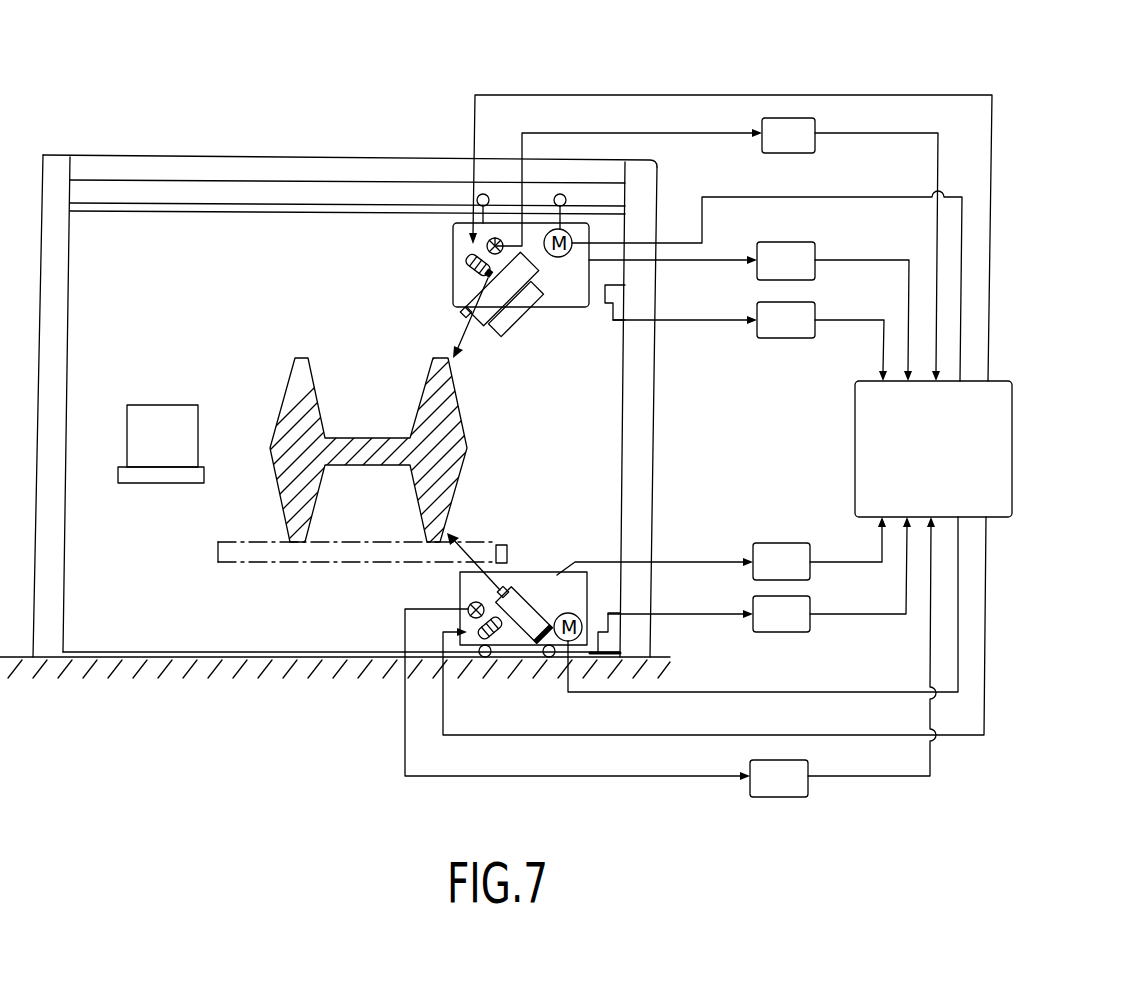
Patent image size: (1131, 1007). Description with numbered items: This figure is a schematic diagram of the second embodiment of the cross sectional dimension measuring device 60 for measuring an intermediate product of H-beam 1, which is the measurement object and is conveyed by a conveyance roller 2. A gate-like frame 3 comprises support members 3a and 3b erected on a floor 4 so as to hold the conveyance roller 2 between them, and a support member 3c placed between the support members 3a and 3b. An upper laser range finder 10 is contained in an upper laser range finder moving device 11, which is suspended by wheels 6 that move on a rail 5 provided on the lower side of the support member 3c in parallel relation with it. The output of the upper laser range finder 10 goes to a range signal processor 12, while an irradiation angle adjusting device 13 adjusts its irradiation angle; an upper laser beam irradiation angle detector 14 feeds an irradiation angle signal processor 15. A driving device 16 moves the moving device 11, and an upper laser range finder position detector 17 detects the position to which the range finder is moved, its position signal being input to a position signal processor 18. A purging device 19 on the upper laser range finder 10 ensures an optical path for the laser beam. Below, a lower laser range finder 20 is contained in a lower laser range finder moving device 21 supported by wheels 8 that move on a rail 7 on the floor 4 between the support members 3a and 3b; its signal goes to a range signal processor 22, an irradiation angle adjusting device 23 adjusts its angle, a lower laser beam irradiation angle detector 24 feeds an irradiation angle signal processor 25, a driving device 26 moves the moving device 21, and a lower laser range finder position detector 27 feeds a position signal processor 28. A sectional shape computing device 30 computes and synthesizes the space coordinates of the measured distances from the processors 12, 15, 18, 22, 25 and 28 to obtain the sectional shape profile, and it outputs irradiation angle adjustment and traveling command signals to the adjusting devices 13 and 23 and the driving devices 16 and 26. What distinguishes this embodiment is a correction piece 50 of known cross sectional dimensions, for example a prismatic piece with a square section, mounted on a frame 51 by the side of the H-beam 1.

The intermediate product of H-beam 1 is at (290, 378).
The conveyance roller 2 is at (218, 542).
The gate-like frame 3 is at (244, 136).
The support member 3a is at (70, 227).
The support member 3b is at (656, 455).
The support member 3c is at (142, 157).
The floor 4 is at (100, 672).
The rail 5 is at (210, 203).
The wheels 6 is at (482, 194).
The rail 7 is at (155, 652).
The wheels 8 is at (485, 657).
The upper laser range finder 10 is at (535, 300).
The upper laser range finder moving device 11 is at (452, 237).
The range signal processor 12 is at (783, 242).
The irradiation angle adjusting device 13 is at (465, 280).
The upper laser beam irradiation angle detector 14 is at (496, 237).
The irradiation angle signal processor 15 is at (790, 153).
The driving device 16 is at (590, 305).
The upper laser range finder position detector 17 is at (620, 280).
The position signal processor 18 is at (781, 338).
The purging device 19 is at (502, 345).
The lower laser range finder 20 is at (520, 575).
The lower laser range finder moving device 21 is at (500, 544).
The range signal processor 22 is at (785, 543).
The irradiation angle adjusting device 23 is at (490, 640).
The lower laser beam irradiation angle detector 24 is at (460, 590).
The irradiation angle signal processor 25 is at (785, 797).
The driving device 26 is at (612, 613).
The lower laser range finder position detector 27 is at (605, 660).
The position signal processor 28 is at (783, 632).
The sectional shape computing device 30 is at (1012, 447).
The correction piece 50 is at (165, 405).
The frame 51 is at (148, 483).
The cross sectional dimension measuring device 60 is at (866, 85).